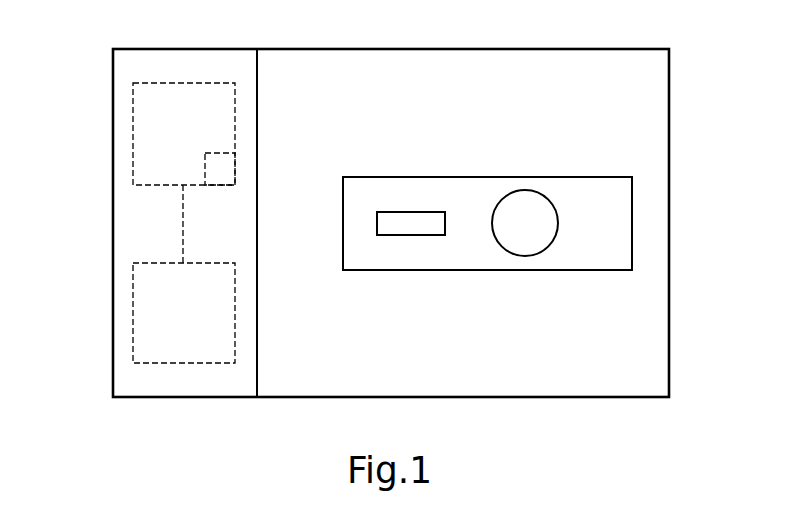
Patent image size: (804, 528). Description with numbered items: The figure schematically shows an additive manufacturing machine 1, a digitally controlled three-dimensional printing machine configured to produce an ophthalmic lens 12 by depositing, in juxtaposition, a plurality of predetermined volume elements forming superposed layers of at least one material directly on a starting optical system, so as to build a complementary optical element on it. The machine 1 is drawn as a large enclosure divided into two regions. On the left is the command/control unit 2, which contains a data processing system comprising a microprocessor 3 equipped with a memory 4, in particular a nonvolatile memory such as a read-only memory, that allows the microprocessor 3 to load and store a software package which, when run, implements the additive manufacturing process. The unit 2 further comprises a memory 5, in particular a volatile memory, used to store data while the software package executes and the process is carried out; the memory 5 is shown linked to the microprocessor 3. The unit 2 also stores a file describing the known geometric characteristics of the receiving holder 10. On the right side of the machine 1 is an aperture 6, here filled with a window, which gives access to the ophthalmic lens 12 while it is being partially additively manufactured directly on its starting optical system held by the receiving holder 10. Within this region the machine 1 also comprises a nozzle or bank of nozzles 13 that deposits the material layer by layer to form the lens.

The additive manufacturing machine 1 is at (669, 120).
The command/control unit 2 is at (128, 382).
The microprocessor 3 is at (133, 130).
The memory 4 is at (222, 172).
The memory 5 is at (133, 318).
The aperture 6 is at (618, 215).
The receiving holder 10 is at (548, 243).
The ophthalmic lens 12 is at (512, 238).
The nozzle or bank of nozzles 13 is at (408, 220).